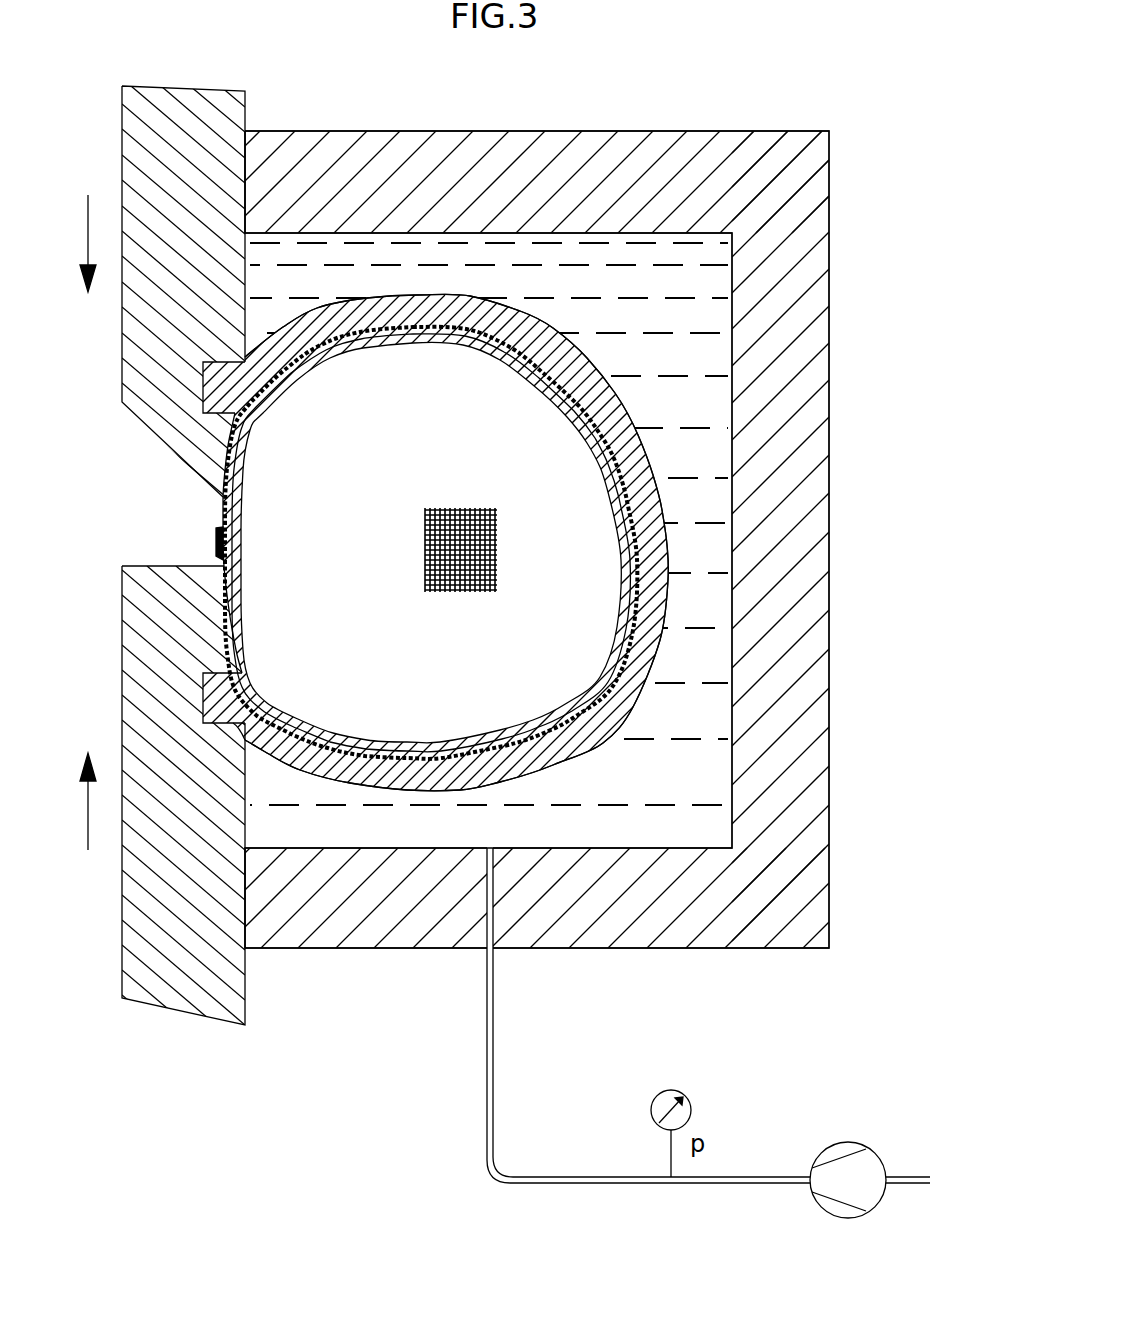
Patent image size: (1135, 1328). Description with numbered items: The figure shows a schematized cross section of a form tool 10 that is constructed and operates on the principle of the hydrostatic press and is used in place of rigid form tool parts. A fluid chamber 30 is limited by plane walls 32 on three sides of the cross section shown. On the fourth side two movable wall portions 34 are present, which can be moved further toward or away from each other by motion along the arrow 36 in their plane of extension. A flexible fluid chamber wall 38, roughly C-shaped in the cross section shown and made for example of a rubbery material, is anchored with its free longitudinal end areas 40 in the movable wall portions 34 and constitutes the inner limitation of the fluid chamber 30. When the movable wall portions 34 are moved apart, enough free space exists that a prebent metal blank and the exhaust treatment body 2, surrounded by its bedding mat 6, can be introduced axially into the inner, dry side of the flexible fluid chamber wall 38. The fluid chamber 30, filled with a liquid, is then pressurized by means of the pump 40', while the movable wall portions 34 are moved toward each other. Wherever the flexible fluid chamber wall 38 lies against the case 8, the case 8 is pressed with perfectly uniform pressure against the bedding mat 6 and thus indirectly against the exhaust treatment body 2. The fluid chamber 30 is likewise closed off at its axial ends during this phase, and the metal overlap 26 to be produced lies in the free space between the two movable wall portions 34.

The exhaust treatment body 2 is at (421, 459).
The bedding mat 6 is at (246, 450).
The case 8 is at (222, 508).
The form tool 10 is at (620, 108).
The metal overlap 26 is at (205, 547).
The fluid chamber 30 is at (705, 262).
The plane walls 32 is at (810, 460).
The movable wall portions 34 is at (148, 338).
The arrow 36 is at (72, 521).
The flexible fluid chamber wall 38 is at (632, 636).
The free longitudinal end areas 40 is at (157, 542).
The pump 40' is at (848, 1144).